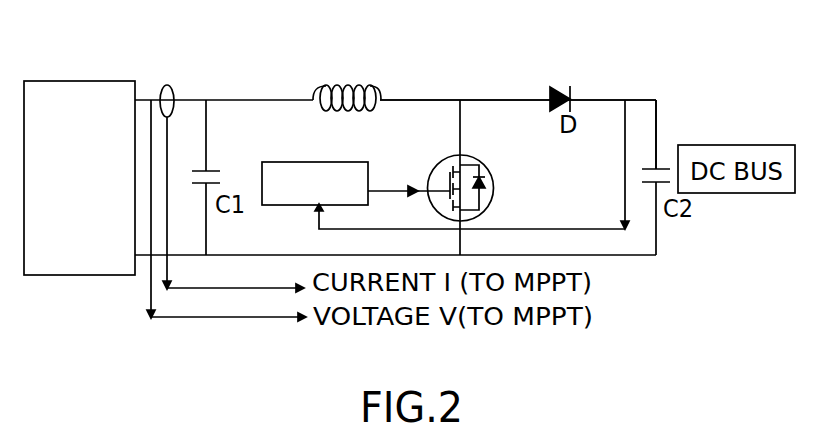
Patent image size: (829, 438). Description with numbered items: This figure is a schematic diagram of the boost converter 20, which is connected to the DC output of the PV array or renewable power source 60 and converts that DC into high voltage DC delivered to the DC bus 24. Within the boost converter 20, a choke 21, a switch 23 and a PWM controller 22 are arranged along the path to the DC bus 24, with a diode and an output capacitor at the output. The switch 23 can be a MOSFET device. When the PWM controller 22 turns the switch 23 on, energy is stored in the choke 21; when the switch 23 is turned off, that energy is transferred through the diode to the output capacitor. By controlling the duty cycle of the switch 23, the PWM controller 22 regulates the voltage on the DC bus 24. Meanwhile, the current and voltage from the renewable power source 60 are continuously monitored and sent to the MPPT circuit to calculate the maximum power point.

The renewable power source 60 is at (100, 97).
The boost converter 20 is at (630, 66).
The choke 21 is at (360, 66).
The PWM controller 22 is at (353, 167).
The switch 23 is at (488, 197).
The DC bus 24 is at (657, 117).